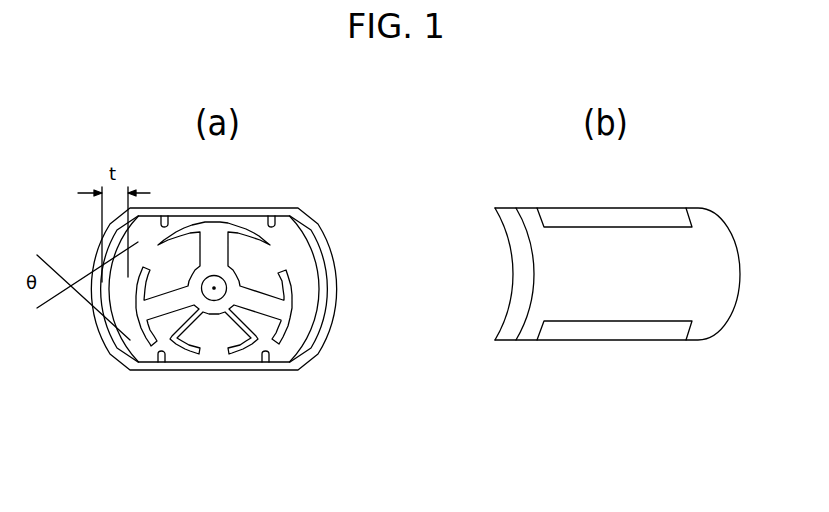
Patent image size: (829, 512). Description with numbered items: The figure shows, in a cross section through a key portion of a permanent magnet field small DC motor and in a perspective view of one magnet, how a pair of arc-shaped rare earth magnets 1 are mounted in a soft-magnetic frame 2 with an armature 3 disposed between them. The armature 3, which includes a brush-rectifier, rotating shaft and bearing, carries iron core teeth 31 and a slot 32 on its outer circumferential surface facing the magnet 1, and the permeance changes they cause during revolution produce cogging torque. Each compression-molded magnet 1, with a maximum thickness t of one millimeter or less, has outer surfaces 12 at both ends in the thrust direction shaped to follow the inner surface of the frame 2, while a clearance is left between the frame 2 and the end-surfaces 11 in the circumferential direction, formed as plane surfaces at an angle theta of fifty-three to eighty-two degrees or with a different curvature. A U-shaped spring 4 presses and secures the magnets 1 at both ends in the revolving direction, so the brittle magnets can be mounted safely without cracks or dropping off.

The arc-shaped magnet 1 is at (298, 310).
The soft-magnetic frame 2 is at (248, 206).
The armature 3 is at (237, 274).
The U-shaped spring 4 is at (265, 358).
The iron core teeth 31 is at (157, 318).
The slot 32 is at (210, 336).
The end-surfaces 11 is at (622, 323).
The outer surface 12 is at (688, 220).